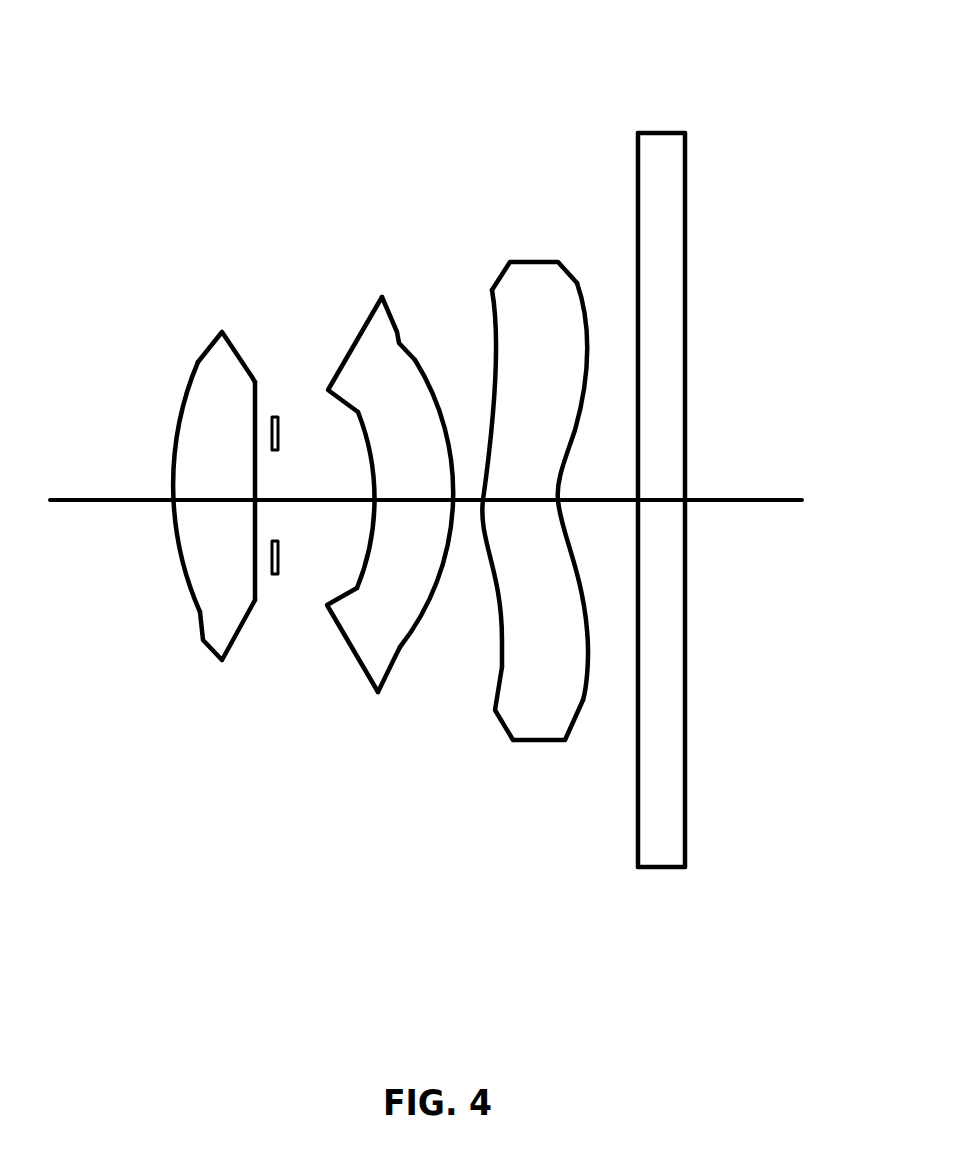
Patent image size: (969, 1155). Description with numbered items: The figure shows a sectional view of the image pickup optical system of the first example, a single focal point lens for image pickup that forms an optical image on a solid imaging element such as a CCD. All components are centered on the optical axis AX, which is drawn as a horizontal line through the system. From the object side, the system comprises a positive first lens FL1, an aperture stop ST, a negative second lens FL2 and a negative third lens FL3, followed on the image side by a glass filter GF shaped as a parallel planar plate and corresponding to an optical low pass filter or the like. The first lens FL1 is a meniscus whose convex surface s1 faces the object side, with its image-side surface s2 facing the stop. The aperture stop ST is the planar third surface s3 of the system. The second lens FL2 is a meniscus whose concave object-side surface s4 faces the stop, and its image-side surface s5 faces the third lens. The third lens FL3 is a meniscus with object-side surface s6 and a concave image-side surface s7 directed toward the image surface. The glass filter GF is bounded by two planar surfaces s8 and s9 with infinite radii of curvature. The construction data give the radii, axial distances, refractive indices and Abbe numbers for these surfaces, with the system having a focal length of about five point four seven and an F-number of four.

The object-side surface of first lens s1 is at (185, 405).
The image-side surface of first lens s2 is at (250, 417).
The aperture stop ST is at (228, 345).
The aperture stop surface s3 is at (276, 417).
The object-side surface of second lens s4 is at (357, 407).
The image-side surface of second lens s5 is at (425, 362).
The object-side surface of third lens s6 is at (506, 343).
The image-side surface of third lens s7 is at (580, 313).
The object-side surface of glass filter s8 is at (637, 193).
The image-side surface of glass filter s9 is at (686, 168).
The first lens FL1 is at (192, 510).
The second lens FL2 is at (368, 525).
The third lens FL3 is at (530, 480).
The glass filter GF is at (676, 490).
The optical axis AX is at (743, 504).